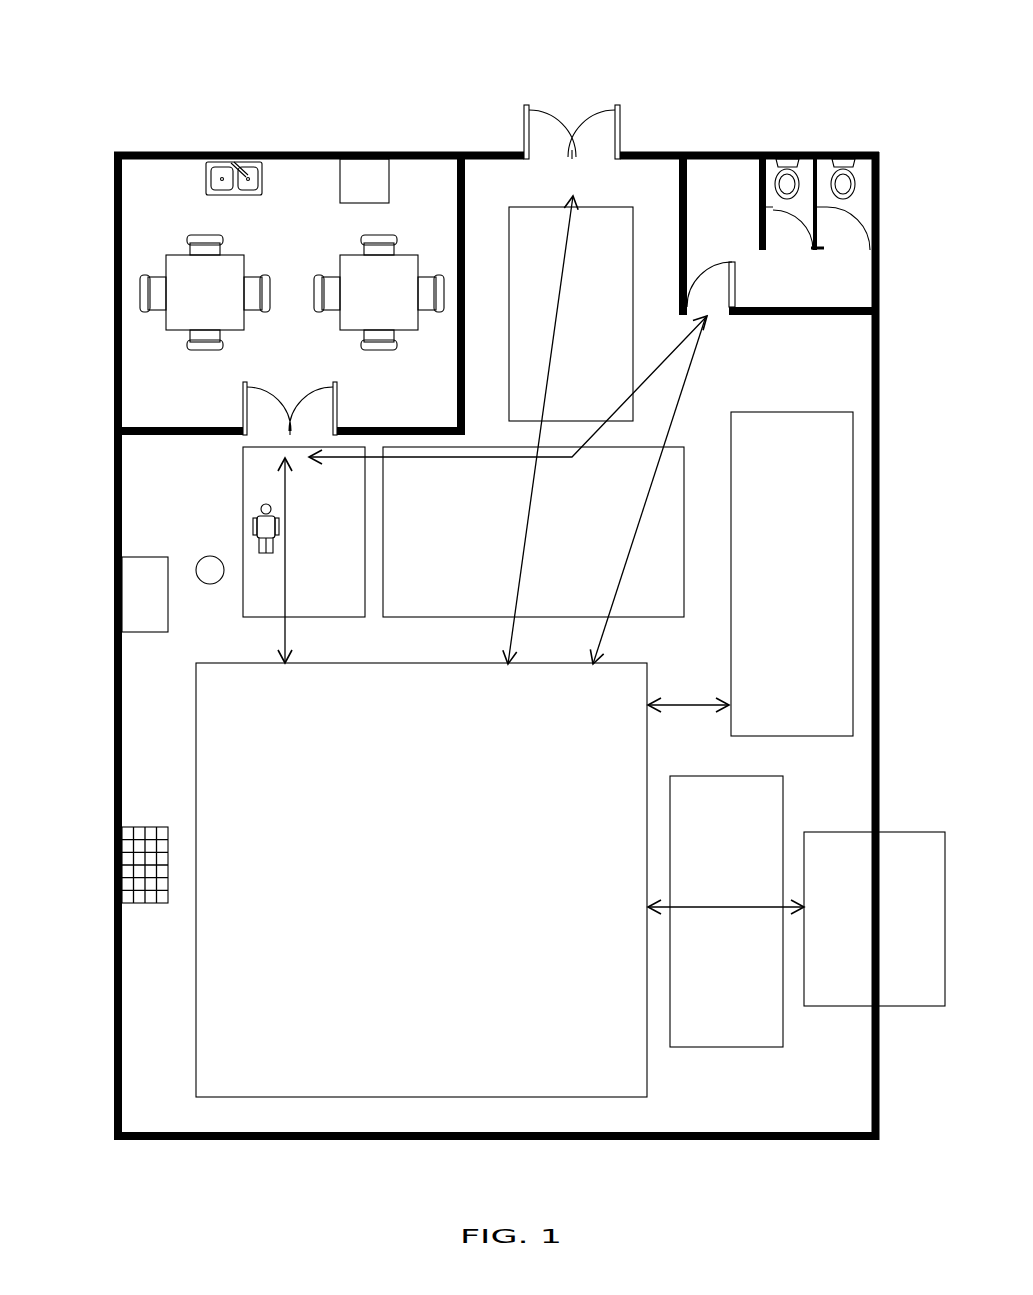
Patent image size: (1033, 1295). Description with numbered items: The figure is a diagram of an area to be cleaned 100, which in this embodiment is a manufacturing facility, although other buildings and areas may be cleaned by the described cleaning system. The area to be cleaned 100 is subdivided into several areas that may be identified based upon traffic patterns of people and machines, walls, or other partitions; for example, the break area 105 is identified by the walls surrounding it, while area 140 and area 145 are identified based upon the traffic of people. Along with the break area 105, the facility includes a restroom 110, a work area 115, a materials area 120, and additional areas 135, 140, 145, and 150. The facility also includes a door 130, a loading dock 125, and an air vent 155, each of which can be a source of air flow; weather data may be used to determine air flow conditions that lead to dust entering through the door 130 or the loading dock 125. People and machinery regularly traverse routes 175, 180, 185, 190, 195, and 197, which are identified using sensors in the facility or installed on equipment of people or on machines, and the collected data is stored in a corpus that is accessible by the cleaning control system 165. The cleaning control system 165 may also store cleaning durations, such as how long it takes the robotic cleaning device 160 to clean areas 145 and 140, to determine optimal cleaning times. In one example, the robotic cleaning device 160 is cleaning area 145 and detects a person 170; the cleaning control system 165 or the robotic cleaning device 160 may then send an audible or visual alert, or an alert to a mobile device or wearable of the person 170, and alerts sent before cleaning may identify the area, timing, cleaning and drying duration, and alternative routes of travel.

The area to be cleaned 100 is at (96, 62).
The break area 105 is at (272, 244).
The restroom 110 is at (763, 287).
The work area 115 is at (404, 824).
The materials area 120 is at (773, 670).
The loading dock 125 is at (857, 976).
The door 130 is at (620, 128).
The area 135 is at (553, 377).
The area 140 is at (442, 544).
The area 145 is at (287, 587).
The area 150 is at (708, 994).
The air vent 155 is at (147, 825).
The robotic cleaning device 160 is at (217, 555).
The cleaning control system 165 is at (145, 555).
The person 170 is at (265, 505).
The route 175 is at (287, 638).
The route 180 is at (510, 638).
The route 185 is at (505, 456).
The route 190 is at (688, 378).
The route 195 is at (707, 703).
The route 197 is at (755, 906).